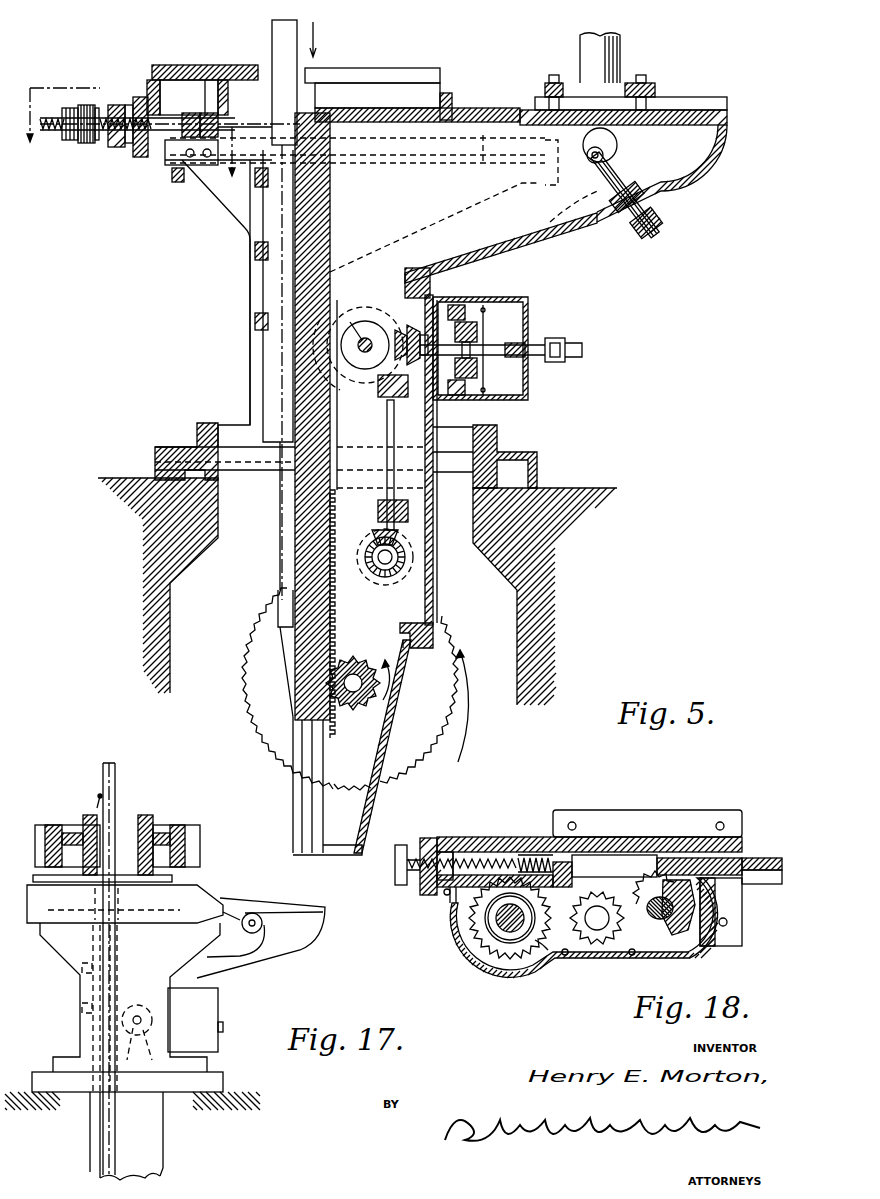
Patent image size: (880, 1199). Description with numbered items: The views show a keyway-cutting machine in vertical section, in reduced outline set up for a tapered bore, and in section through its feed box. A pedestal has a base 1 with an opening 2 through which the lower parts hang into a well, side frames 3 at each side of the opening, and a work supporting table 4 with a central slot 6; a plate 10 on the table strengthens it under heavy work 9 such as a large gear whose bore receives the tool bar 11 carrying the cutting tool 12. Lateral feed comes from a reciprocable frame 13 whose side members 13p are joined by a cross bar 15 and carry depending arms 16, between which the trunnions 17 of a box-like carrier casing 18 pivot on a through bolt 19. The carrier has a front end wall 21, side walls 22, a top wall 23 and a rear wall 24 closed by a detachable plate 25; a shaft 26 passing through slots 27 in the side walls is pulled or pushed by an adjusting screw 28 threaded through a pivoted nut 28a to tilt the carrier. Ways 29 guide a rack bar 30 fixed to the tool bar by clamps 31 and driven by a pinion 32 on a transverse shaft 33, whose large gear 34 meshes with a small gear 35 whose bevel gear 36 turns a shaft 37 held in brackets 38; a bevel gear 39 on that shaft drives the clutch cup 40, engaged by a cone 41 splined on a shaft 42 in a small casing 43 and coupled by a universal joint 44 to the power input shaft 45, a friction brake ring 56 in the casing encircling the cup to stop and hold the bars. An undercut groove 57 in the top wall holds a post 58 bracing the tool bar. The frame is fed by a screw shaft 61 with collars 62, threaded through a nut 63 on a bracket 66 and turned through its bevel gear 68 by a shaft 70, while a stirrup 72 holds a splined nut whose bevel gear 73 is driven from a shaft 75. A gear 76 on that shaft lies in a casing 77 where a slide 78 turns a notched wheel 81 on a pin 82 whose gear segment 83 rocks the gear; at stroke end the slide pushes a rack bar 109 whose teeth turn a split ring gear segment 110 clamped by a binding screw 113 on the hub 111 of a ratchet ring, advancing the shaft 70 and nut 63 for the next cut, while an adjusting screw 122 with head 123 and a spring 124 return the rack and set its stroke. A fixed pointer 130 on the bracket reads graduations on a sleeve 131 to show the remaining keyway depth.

In FIG. 5, the base 1 is at (537, 455).
In FIG. 17, the base 1 is at (40, 1072).
In FIG. 5, the opening 2 is at (237, 445).
In FIG. 5, the side frames 3 is at (250, 365).
In FIG. 17, the side frames 3 is at (130, 1007).
In FIG. 5, the work supporting table 4 is at (148, 80).
In FIG. 17, the work supporting table 4 is at (27, 900).
In FIG. 5, the central longitudinal slot 6 is at (228, 90).
In FIG. 17, the work 9 is at (200, 846).
In FIG. 5, the plate 10 is at (192, 65).
In FIG. 17, the plate 10 is at (33, 878).
In FIG. 5, the tool bar 11 is at (272, 38).
In FIG. 17, the tool bar 11 is at (116, 790).
In FIG. 5, the cutting tool 12 is at (130, 158).
In FIG. 17, the cutting tool 12 is at (97, 798).
In FIG. 5, the carrying slide or frame 13 is at (195, 165).
In FIG. 5, the side longitudinal members 13p is at (558, 165).
In FIG. 5, the cross bar 15 is at (208, 82).
In FIG. 5, the arm 16 is at (232, 212).
In FIG. 17, the arm 16 is at (207, 957).
In FIG. 5, the trunnion 17 is at (362, 305).
In FIG. 17, the trunnion 17 is at (146, 1046).
In FIG. 5, the carrier casing 18 is at (727, 165).
In FIG. 17, the carrier casing 18 is at (248, 962).
In FIG. 5, the through bolt 19 is at (350, 322).
In FIG. 17, the through bolt 19 is at (134, 1035).
In FIG. 5, the front end wall 21 is at (330, 242).
In FIG. 5, the side walls 22 is at (702, 196).
In FIG. 5, the top wall 23 is at (410, 125).
In FIG. 5, the rear wall 24 is at (410, 690).
In FIG. 5, the detachable plate 25 is at (433, 510).
In FIG. 5, the bolt or shaft 26 is at (604, 156).
In FIG. 17, the bolt or shaft 26 is at (262, 924).
In FIG. 5, the slots or openings 27 is at (617, 140).
In FIG. 5, the adjusting screw 28 is at (628, 174).
In FIG. 5, the nut 28a is at (648, 238).
In FIG. 5, the ways 29 is at (330, 190).
In FIG. 5, the rack bar 30 is at (330, 226).
In FIG. 17, the rack bar 30 is at (88, 1124).
In FIG. 5, the clamps 31 is at (262, 187).
In FIG. 17, the clamps 31 is at (80, 1006).
In FIG. 5, the pinion 32 is at (362, 665).
In FIG. 5, the transverse shaft 33 is at (350, 700).
In FIG. 5, the large gear 34 is at (250, 738).
In FIG. 5, the small gear 35 is at (374, 557).
In FIG. 5, the bevel gear 36 is at (372, 535).
In FIG. 5, the shaft 37 is at (387, 445).
In FIG. 5, the brackets 38 is at (378, 395).
In FIG. 5, the bevel gear 39 is at (395, 330).
In FIG. 5, the cup 40 is at (412, 328).
In FIG. 5, the cone 41 is at (472, 330).
In FIG. 5, the shaft 42 is at (535, 340).
In FIG. 5, the small casing 43 is at (520, 297).
In FIG. 17, the small casing 43 is at (218, 997).
In FIG. 5, the universal joint 44 is at (560, 338).
In FIG. 5, the power input shaft 45 is at (582, 350).
In FIG. 5, the friction brake ring 56 is at (456, 305).
In FIG. 5, the undercut groove 57 is at (727, 112).
In FIG. 5, the post 58 is at (622, 54).
In FIG. 5, the screw shaft 61 is at (50, 132).
In FIG. 5, the collar 62 is at (228, 98).
In FIG. 5, the nut 63 is at (118, 105).
In FIG. 5, the bracket 66 is at (68, 140).
In FIG. 5, the bevel gear 68 is at (142, 157).
In FIG. 18, the shaft 70 is at (480, 966).
In FIG. 5, the grooved semicircular collar or stirrup 72 is at (185, 113).
In FIG. 5, the bevel gear 73 is at (208, 113).
In FIG. 18, the shaft 75 is at (597, 932).
In FIG. 18, the gear 76 is at (546, 930).
In FIG. 18, the box or casing 77 is at (638, 812).
In FIG. 18, the slide 78 is at (760, 858).
In FIG. 18, the wheel 81 is at (742, 918).
In FIG. 18, the pin 82 is at (660, 921).
In FIG. 18, the gear segment 83 is at (634, 886).
In FIG. 18, the rack bar 109 is at (500, 855).
In FIG. 18, the split ring gear segment 110 is at (480, 928).
In FIG. 18, the hub portion 111 is at (490, 945).
In FIG. 18, the binding screw 113 is at (508, 935).
In FIG. 18, the adjusting screw 122 is at (420, 895).
In FIG. 18, the head 123 is at (400, 845).
In FIG. 18, the spring 124 is at (447, 852).
In FIG. 5, the fixed pointer 130 is at (86, 105).
In FIG. 5, the sleeve 131 is at (97, 140).